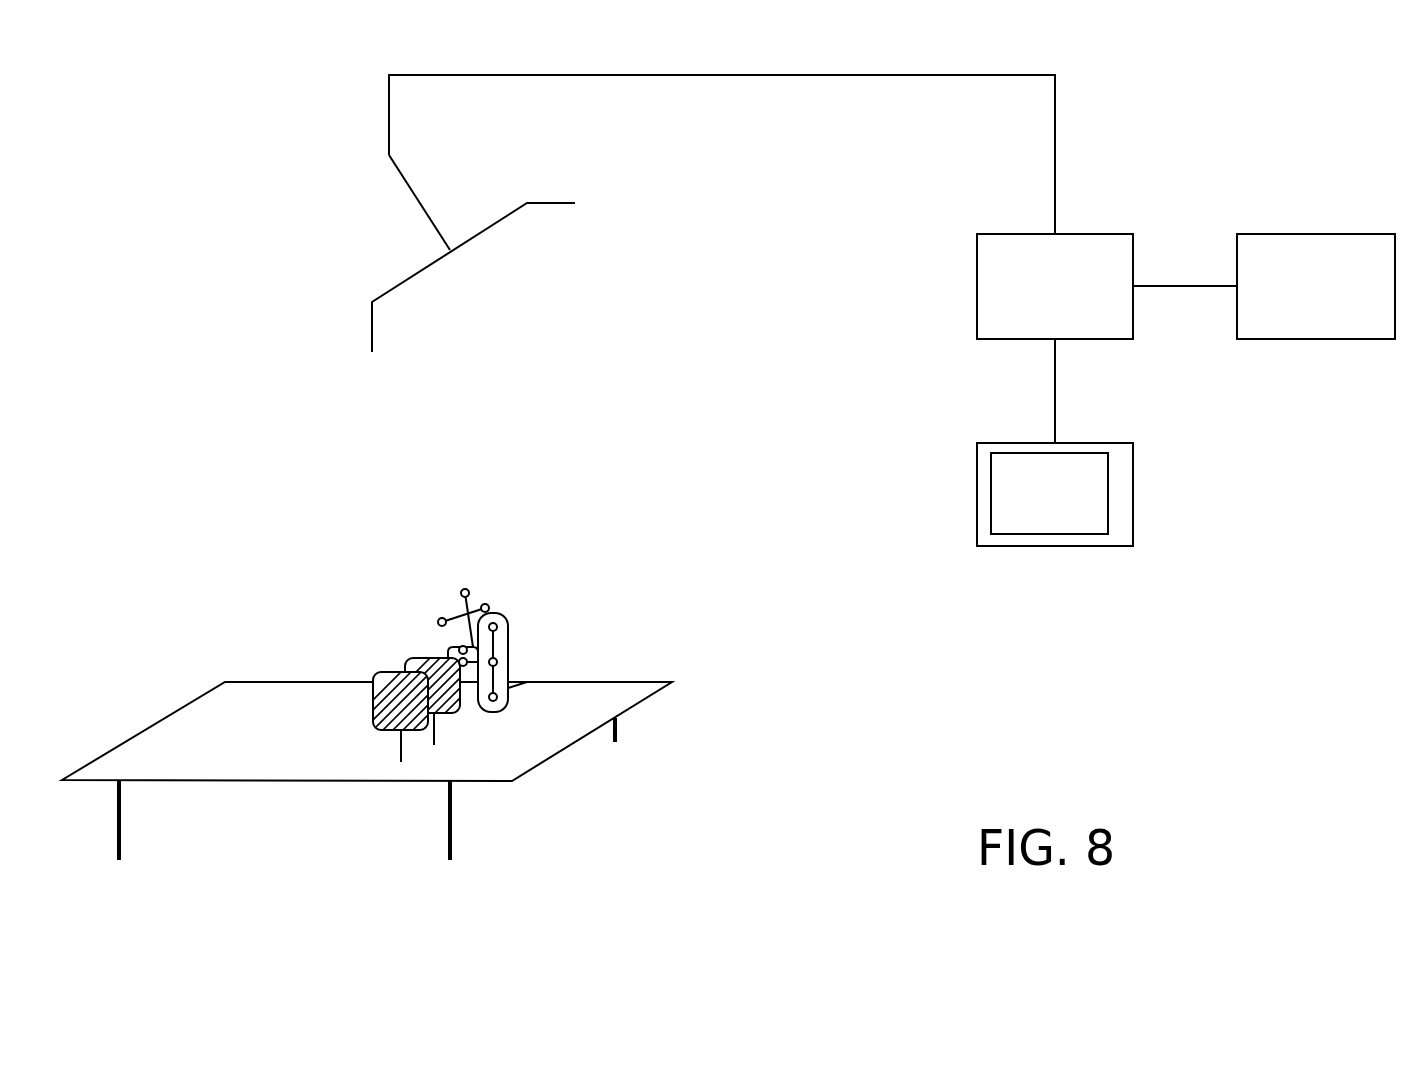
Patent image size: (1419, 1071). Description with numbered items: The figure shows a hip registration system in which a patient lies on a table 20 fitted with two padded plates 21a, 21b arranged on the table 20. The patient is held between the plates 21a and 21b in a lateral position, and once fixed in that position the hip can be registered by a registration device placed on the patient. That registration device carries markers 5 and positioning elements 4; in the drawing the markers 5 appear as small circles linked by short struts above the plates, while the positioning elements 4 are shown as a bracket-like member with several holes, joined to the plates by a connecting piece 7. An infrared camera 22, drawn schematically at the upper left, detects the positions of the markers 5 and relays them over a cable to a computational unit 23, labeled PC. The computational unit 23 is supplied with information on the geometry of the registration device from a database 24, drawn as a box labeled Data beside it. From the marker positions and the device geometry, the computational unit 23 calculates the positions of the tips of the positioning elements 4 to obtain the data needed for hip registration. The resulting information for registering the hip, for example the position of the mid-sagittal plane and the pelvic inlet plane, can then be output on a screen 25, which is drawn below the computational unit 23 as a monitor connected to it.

The positioning elements 4 is at (521, 612).
The markers 5 is at (467, 588).
The connecting arm 7 is at (502, 645).
The table 20 is at (635, 698).
The padded plate 21a is at (418, 718).
The padded plate 21b is at (408, 670).
The infrared camera 22 is at (403, 280).
The computational unit 23 is at (1098, 234).
The database 24 is at (1308, 234).
The screen 25 is at (1130, 489).